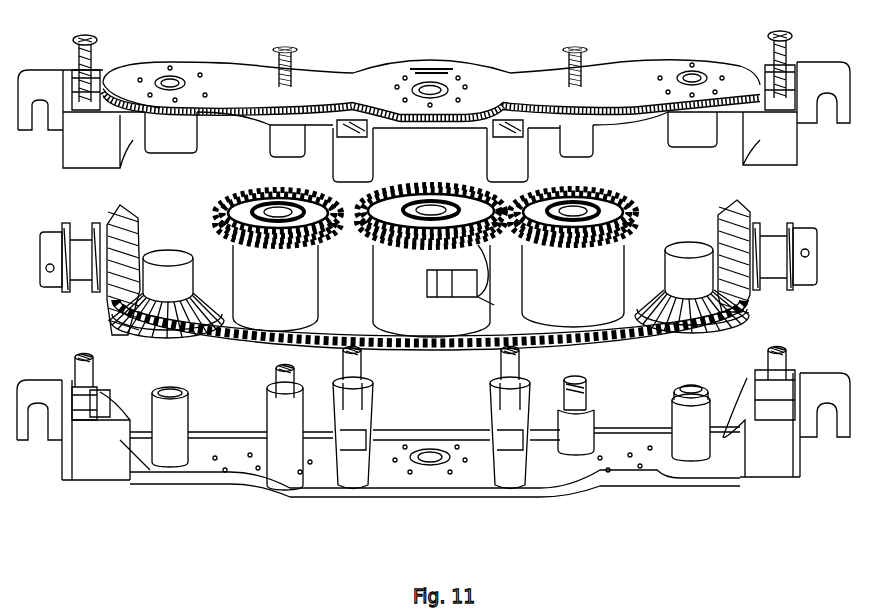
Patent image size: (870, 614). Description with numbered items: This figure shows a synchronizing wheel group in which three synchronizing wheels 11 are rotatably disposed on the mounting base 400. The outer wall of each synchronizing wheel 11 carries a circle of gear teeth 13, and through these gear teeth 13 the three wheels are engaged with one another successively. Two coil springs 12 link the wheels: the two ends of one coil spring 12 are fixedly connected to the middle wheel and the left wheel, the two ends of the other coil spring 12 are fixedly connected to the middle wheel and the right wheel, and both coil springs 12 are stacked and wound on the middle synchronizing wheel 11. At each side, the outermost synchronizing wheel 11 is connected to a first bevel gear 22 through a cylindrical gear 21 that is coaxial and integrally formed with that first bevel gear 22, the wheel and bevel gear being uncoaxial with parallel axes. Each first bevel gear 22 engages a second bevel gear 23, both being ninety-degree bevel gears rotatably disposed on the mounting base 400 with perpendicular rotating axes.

The mounting base 400 is at (623, 78).
The synchronizing wheel 11 is at (235, 198).
The coil spring 12 is at (333, 287).
The gear teeth 13 is at (630, 340).
The cylindrical gear 21 is at (723, 330).
The first bevel gear 22 is at (748, 317).
The second bevel gear 23 is at (767, 283).